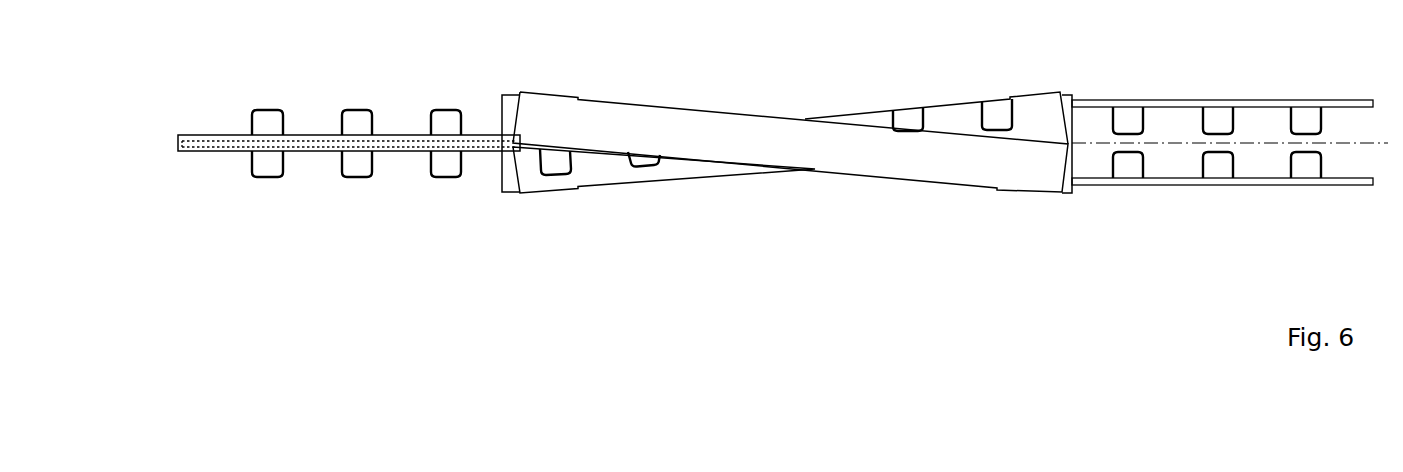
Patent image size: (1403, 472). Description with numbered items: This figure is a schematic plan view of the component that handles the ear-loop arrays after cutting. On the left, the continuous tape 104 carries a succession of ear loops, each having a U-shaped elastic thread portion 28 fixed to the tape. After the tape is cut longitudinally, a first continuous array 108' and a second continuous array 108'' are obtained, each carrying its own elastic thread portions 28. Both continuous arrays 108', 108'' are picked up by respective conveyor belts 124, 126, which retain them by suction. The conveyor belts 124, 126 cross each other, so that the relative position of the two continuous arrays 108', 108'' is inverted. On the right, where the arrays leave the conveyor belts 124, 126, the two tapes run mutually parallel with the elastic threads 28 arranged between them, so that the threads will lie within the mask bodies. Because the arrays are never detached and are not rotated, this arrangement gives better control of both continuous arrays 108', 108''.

The U-shaped elastic thread portion 28 is at (362, 118).
The continuous tape 104 is at (209, 152).
The first continuous array 108' is at (777, 154).
The second continuous array 108'' is at (777, 147).
The conveyor belt 124 is at (652, 102).
The conveyor belt 126 is at (603, 187).